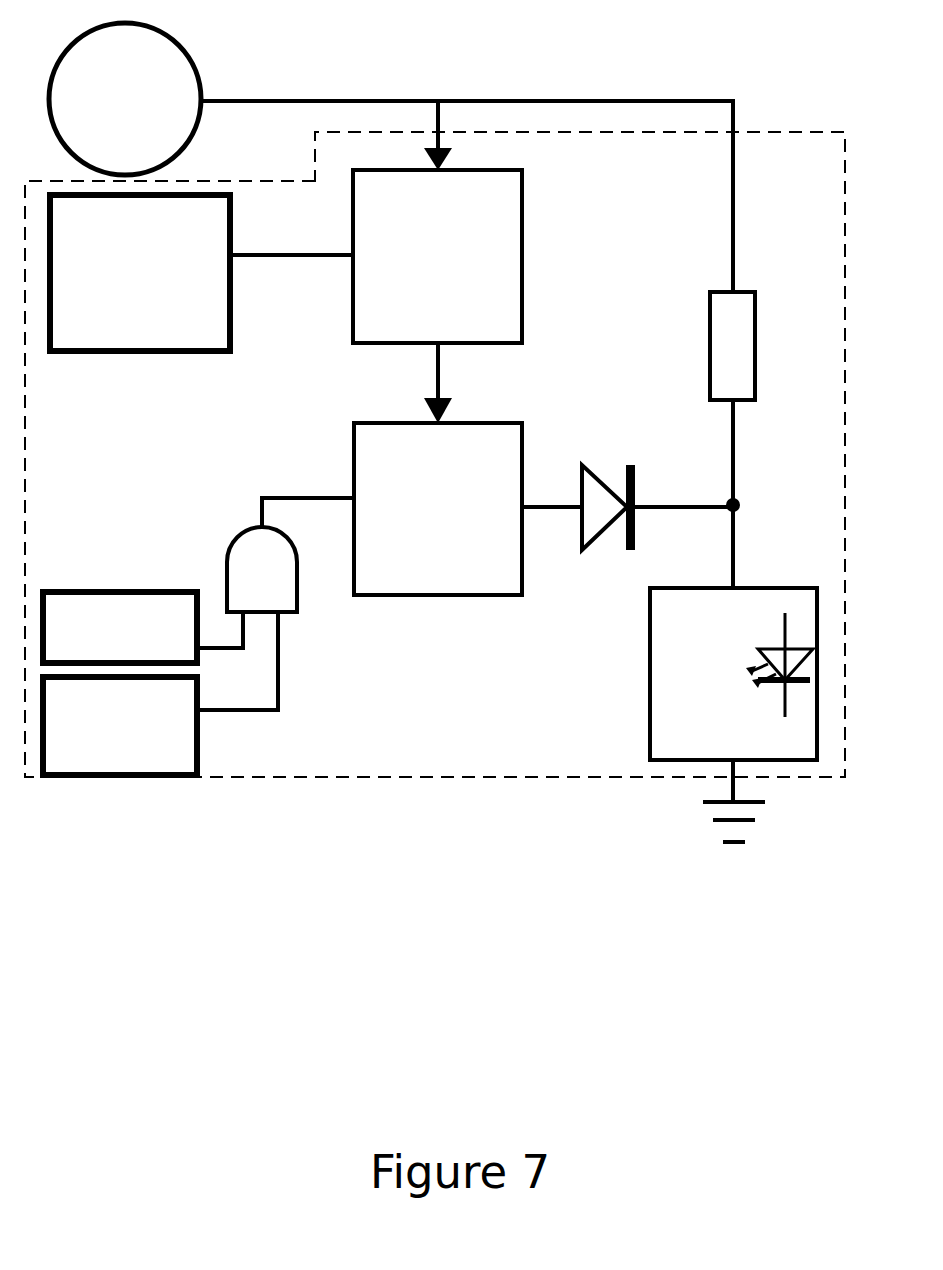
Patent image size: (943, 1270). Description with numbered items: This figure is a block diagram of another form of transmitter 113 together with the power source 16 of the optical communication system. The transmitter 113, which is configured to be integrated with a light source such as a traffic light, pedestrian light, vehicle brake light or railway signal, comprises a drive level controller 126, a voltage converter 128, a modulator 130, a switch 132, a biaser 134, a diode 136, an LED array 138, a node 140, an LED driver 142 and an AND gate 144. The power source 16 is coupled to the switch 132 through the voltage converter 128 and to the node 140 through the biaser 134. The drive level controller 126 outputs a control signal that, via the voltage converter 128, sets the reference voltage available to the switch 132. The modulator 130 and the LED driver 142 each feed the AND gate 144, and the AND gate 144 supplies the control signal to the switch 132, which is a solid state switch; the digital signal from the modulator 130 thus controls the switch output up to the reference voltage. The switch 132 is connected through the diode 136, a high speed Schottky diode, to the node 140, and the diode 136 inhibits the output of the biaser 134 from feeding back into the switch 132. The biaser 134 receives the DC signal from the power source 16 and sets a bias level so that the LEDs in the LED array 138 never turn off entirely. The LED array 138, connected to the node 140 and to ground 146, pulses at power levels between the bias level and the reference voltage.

The power source 16 is at (170, 75).
The transmitter 113 is at (330, 805).
The drive level controller 126 is at (122, 338).
The voltage converter 128 is at (473, 282).
The modulator 130 is at (152, 755).
The switch 132 is at (448, 580).
The biaser 134 is at (742, 350).
The diode 136 is at (617, 555).
The LED array 138 is at (678, 723).
The node 140 is at (727, 498).
The LED driver 142 is at (138, 612).
The AND gate 144 is at (250, 543).
The ground 146 is at (702, 820).